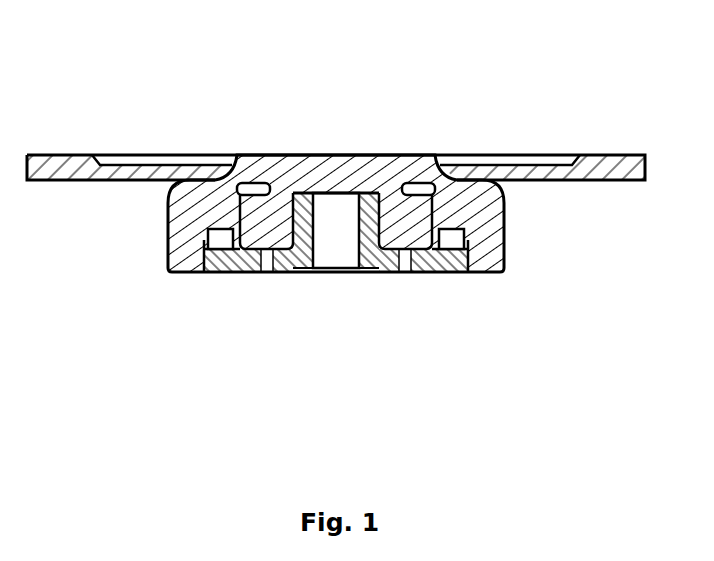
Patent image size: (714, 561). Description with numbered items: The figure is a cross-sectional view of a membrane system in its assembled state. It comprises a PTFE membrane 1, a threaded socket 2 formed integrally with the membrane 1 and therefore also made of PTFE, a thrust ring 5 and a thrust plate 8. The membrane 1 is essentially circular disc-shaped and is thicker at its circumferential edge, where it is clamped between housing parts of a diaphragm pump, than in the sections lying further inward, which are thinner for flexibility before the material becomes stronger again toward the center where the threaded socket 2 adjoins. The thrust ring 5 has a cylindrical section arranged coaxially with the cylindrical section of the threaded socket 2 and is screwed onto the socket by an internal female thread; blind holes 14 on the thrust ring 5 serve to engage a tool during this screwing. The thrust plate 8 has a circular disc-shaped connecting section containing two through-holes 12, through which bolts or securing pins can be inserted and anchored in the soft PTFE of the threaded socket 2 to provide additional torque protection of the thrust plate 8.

The PTFE membrane 1 is at (560, 170).
The thrust ring 5 is at (185, 217).
The blind holes 14 is at (170, 262).
The thrust plate 8 is at (377, 262).
The through-holes 12 is at (266, 270).
The threaded socket 2 is at (239, 250).